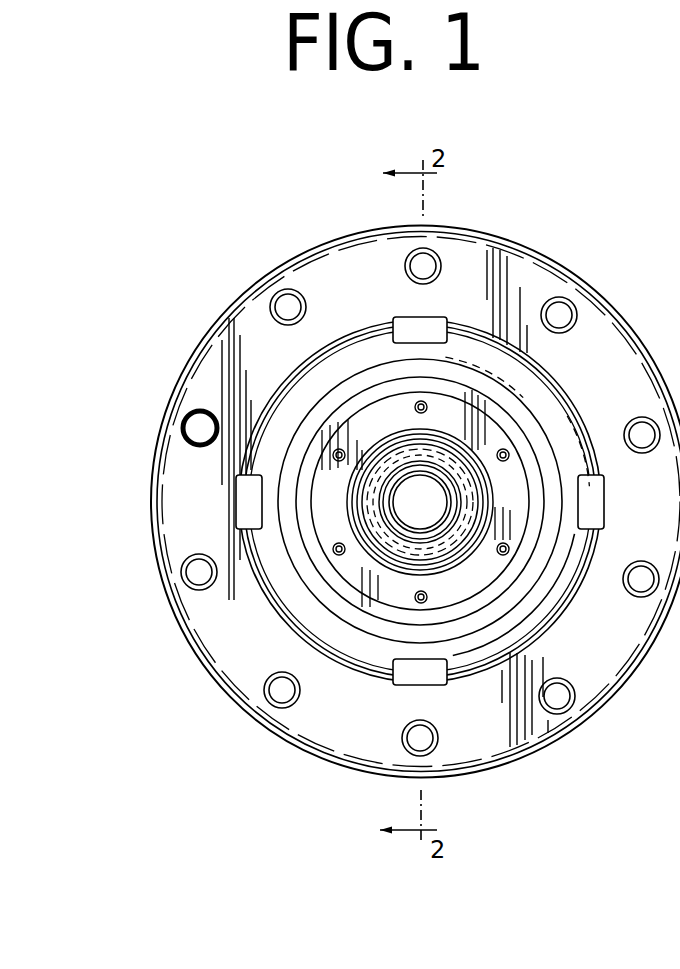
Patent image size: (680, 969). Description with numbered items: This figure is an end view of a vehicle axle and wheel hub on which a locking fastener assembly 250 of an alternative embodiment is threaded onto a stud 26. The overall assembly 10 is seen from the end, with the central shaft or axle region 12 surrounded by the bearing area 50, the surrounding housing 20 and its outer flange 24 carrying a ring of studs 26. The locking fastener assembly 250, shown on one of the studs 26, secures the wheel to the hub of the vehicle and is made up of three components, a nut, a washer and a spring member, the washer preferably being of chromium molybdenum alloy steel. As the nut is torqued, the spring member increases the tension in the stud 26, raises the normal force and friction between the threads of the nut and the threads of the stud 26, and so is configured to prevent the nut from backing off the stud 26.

The bearing assembly 10 is at (522, 237).
The shaft 12 is at (413, 506).
The housing 20 is at (498, 718).
The flange 24 is at (373, 278).
The stud 26 is at (283, 302).
The bearing 50 is at (470, 448).
The locking fastener assembly 250 is at (197, 433).